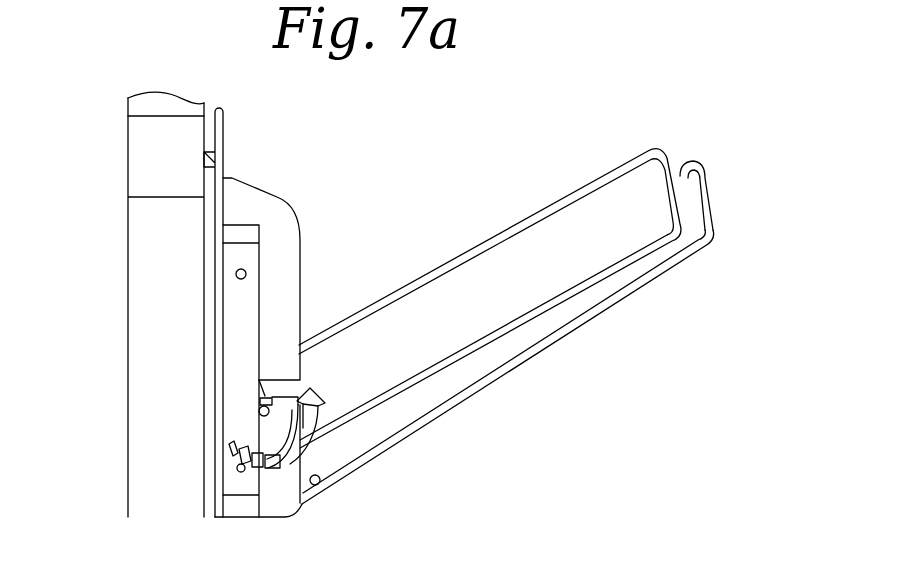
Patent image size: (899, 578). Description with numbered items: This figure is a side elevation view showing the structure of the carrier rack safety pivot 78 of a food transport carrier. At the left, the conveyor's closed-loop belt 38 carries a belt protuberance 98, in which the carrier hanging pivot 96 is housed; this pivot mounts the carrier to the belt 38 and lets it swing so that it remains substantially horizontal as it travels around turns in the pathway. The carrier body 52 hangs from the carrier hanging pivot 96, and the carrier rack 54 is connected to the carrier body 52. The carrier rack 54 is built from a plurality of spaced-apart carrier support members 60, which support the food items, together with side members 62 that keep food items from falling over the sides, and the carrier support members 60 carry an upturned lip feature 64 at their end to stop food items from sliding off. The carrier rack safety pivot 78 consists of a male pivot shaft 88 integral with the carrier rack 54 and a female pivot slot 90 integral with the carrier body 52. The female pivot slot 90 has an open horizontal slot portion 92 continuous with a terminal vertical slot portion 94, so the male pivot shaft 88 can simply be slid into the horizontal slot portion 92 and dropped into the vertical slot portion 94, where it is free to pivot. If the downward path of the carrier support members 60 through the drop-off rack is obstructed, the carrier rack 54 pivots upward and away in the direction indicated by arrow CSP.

The belt 38 is at (138, 233).
The belt protuberance 98 is at (150, 160).
The carrier hanging pivot 96 is at (213, 157).
The carrier body 52 is at (268, 210).
The horizontal slot portion 92 is at (287, 387).
The female pivot slot 90 is at (260, 407).
The vertical slot portion 94 is at (260, 410).
The male pivot shaft 88 is at (260, 413).
The carrier rack safety pivot 78 is at (273, 412).
The carrier rack 54 is at (475, 241).
The side members 62 is at (577, 197).
The upturned lip feature 64 is at (699, 163).
The carrier support members 60 is at (538, 315).
The arrow CSP is at (286, 448).